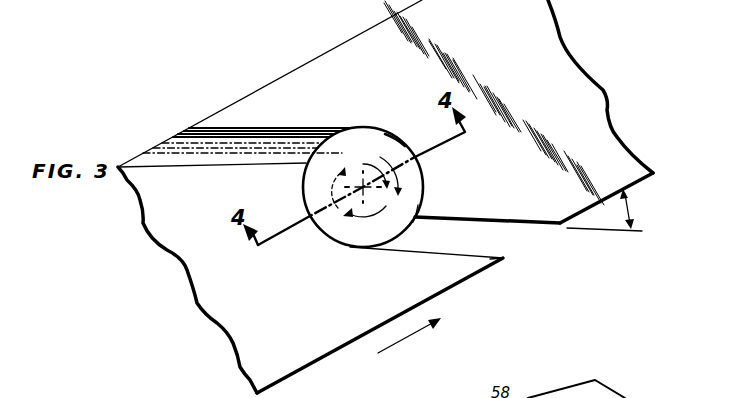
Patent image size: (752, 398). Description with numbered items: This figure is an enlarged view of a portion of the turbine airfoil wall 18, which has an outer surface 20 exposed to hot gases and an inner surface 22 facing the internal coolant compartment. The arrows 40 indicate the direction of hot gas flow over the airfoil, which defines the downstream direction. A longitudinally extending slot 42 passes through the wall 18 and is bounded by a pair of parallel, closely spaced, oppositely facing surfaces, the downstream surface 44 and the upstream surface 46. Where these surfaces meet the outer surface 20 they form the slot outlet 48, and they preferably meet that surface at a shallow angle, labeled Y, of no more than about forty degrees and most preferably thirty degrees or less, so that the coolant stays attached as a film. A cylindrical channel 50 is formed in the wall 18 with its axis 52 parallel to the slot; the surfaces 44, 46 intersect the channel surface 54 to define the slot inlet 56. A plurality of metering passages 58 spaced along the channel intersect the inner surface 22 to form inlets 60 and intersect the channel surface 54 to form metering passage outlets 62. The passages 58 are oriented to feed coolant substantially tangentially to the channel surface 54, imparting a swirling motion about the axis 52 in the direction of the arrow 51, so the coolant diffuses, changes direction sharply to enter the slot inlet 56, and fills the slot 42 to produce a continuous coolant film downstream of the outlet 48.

The wall 18 is at (203, 278).
The outer surface 20 is at (316, 361).
The inner surface 22 is at (272, 82).
The arrows 40 is at (413, 337).
The slot 42 is at (496, 234).
The downstream surface 44 is at (474, 220).
The upstream surface 46 is at (412, 250).
The slot outlet 48 is at (512, 251).
The cylindrical channel 50 is at (366, 133).
The arrow 51 is at (368, 217).
The axis 52 is at (363, 189).
The surface of the channel 54 is at (395, 142).
The slot inlet 56 is at (413, 217).
The metering passages 58 is at (230, 158).
The inlets 60 is at (165, 141).
The metering passage outlets 62 is at (317, 153).
The angle Y is at (604, 210).